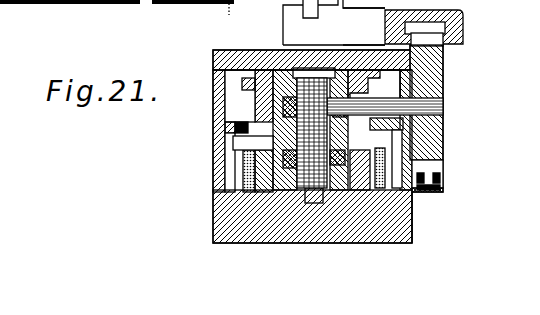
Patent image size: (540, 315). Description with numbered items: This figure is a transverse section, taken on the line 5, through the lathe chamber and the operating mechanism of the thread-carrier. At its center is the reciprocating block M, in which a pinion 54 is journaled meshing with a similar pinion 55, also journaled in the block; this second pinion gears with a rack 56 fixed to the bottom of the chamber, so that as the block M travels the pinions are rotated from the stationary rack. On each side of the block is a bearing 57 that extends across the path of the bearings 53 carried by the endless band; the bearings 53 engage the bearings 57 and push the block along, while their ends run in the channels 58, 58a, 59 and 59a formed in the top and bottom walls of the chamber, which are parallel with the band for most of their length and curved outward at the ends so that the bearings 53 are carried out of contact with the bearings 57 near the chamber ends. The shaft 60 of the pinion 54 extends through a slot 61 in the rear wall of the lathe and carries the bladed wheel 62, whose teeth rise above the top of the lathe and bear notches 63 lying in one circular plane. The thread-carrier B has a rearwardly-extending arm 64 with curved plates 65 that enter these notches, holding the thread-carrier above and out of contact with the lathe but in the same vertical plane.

The reciprocating block M is at (224, 90).
The pinion 54 is at (293, 68).
The section line 5 is at (235, 11).
The thread-carrier B is at (283, 29).
The rearwardly-extending arm 64 is at (364, 26).
The curved plates 65 is at (463, 30).
The slot 61 is at (422, 100).
The shaft 60 is at (418, 106).
The channel 58a is at (405, 123).
The bearing 57 is at (385, 141).
The bearing 53 is at (383, 160).
The bladed wheel 62 is at (443, 172).
The notches 63 is at (443, 192).
The channel 59a is at (412, 196).
The channel 59 is at (215, 220).
The channel 58 is at (233, 128).
The rack 56 is at (316, 186).
The pinion 55 is at (306, 192).